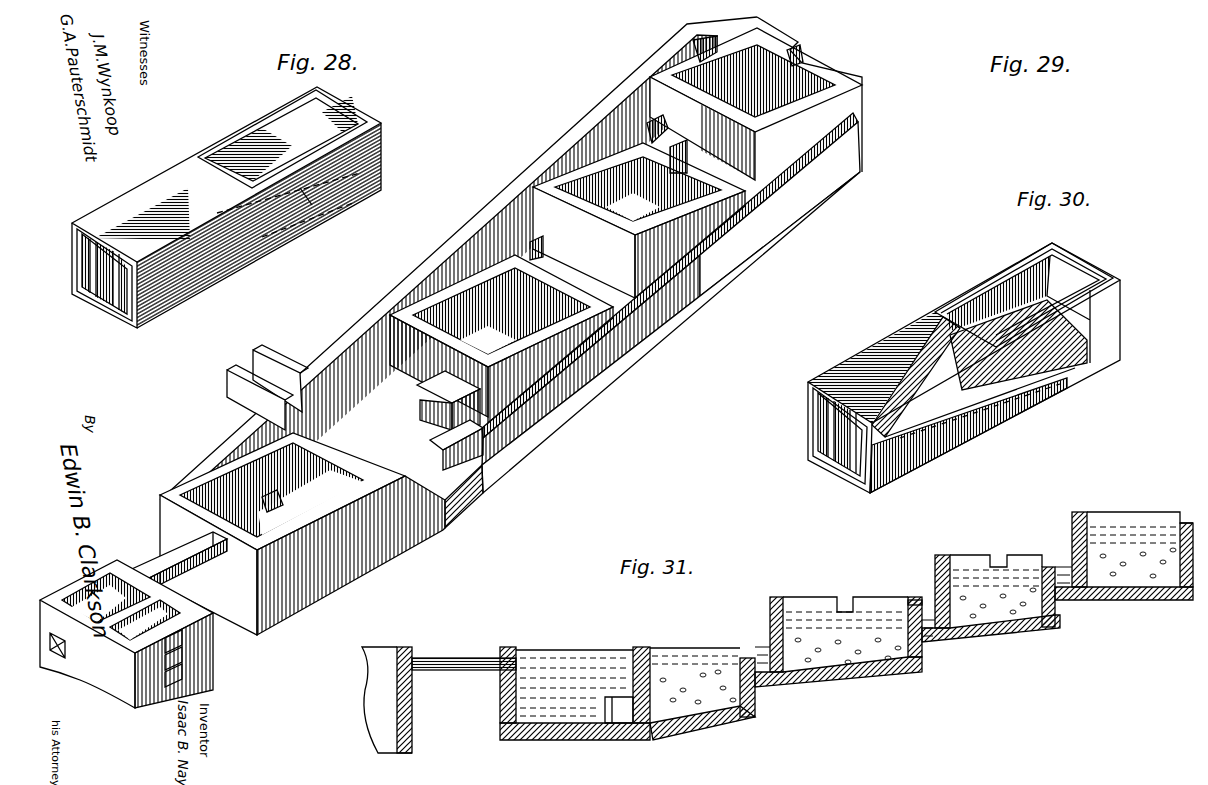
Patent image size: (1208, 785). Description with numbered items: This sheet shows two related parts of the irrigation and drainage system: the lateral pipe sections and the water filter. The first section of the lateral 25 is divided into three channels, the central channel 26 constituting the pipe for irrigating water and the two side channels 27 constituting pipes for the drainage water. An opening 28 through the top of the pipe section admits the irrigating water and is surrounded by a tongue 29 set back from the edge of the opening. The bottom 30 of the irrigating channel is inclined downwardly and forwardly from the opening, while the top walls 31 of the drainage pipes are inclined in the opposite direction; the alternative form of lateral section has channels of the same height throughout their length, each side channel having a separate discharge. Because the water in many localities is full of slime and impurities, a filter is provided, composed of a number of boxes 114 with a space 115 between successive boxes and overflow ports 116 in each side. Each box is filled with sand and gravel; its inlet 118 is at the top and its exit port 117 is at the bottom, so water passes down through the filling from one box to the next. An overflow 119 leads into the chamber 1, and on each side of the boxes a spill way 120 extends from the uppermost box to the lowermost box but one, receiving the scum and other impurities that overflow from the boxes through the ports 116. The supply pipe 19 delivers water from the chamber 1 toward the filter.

In FIG. 29, the chamber 1 is at (97, 580).
In FIG. 31, the chamber 1 is at (372, 674).
In FIG. 31, the supply pipe 19 is at (470, 672).
In FIG. 30, the first section of the lateral 25 is at (870, 363).
In FIG. 30, the central channel 26 is at (847, 460).
In FIG. 30, the drainage channels 27 is at (822, 437).
In FIG. 30, the opening 28 is at (1020, 287).
In FIG. 30, the tongue 29 is at (948, 312).
In FIG. 30, the bottom of irrigating water channel 30 is at (1037, 325).
In FIG. 30, the top walls of the drainage pipes 31 is at (933, 407).
In FIG. 29, the boxes 114 is at (600, 395).
In FIG. 31, the space 115 is at (925, 605).
In FIG. 29, the overflow ports 116 is at (745, 250).
In FIG. 31, the overflow ports 116 is at (847, 600).
In FIG. 28, the exit port 117 is at (117, 315).
In FIG. 29, the exit port 117 is at (647, 130).
In FIG. 31, the exit port 117 is at (957, 640).
In FIG. 28, the inlet 118 is at (236, 142).
In FIG. 29, the inlet 118 is at (630, 373).
In FIG. 31, the inlet 118 is at (903, 605).
In FIG. 29, the overflow 119 is at (156, 562).
In FIG. 29, the spill way 120 is at (457, 251).